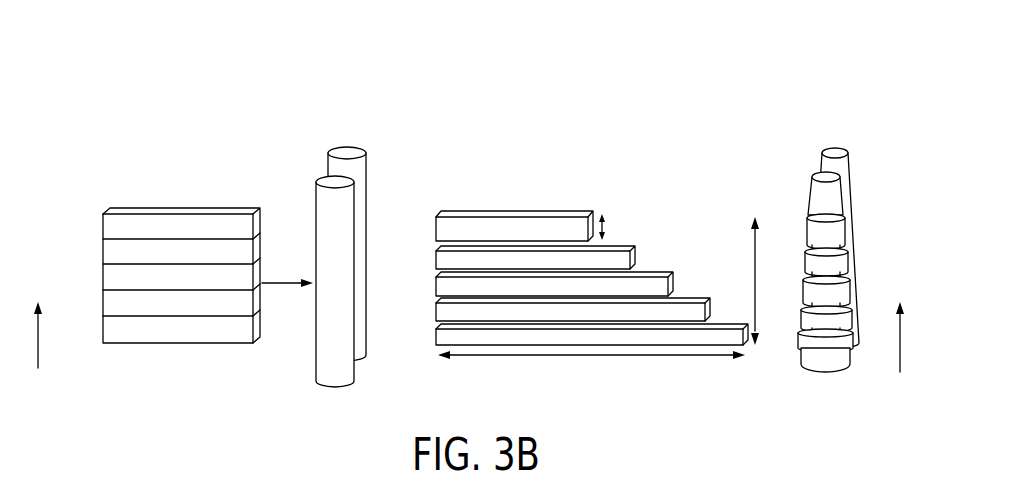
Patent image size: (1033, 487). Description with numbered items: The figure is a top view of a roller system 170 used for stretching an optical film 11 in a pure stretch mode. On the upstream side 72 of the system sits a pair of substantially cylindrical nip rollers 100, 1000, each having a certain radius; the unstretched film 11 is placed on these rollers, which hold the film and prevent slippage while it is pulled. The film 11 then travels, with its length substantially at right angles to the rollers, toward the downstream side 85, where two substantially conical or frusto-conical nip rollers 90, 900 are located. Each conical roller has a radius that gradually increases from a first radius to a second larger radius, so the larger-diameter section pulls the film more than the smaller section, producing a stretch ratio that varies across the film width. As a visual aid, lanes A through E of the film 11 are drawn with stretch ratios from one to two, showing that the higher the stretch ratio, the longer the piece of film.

The layered tissue / tissue slab 11 is at (86, 276).
The upstream side 72 is at (39, 351).
The cylindrical nip roller 100 is at (330, 372).
The cylindrical nip roller 1000 is at (358, 352).
The roller system 170 is at (410, 137).
The conical roller 900 is at (848, 172).
The conical roller 90 is at (825, 363).
The downstream side 85 is at (902, 352).